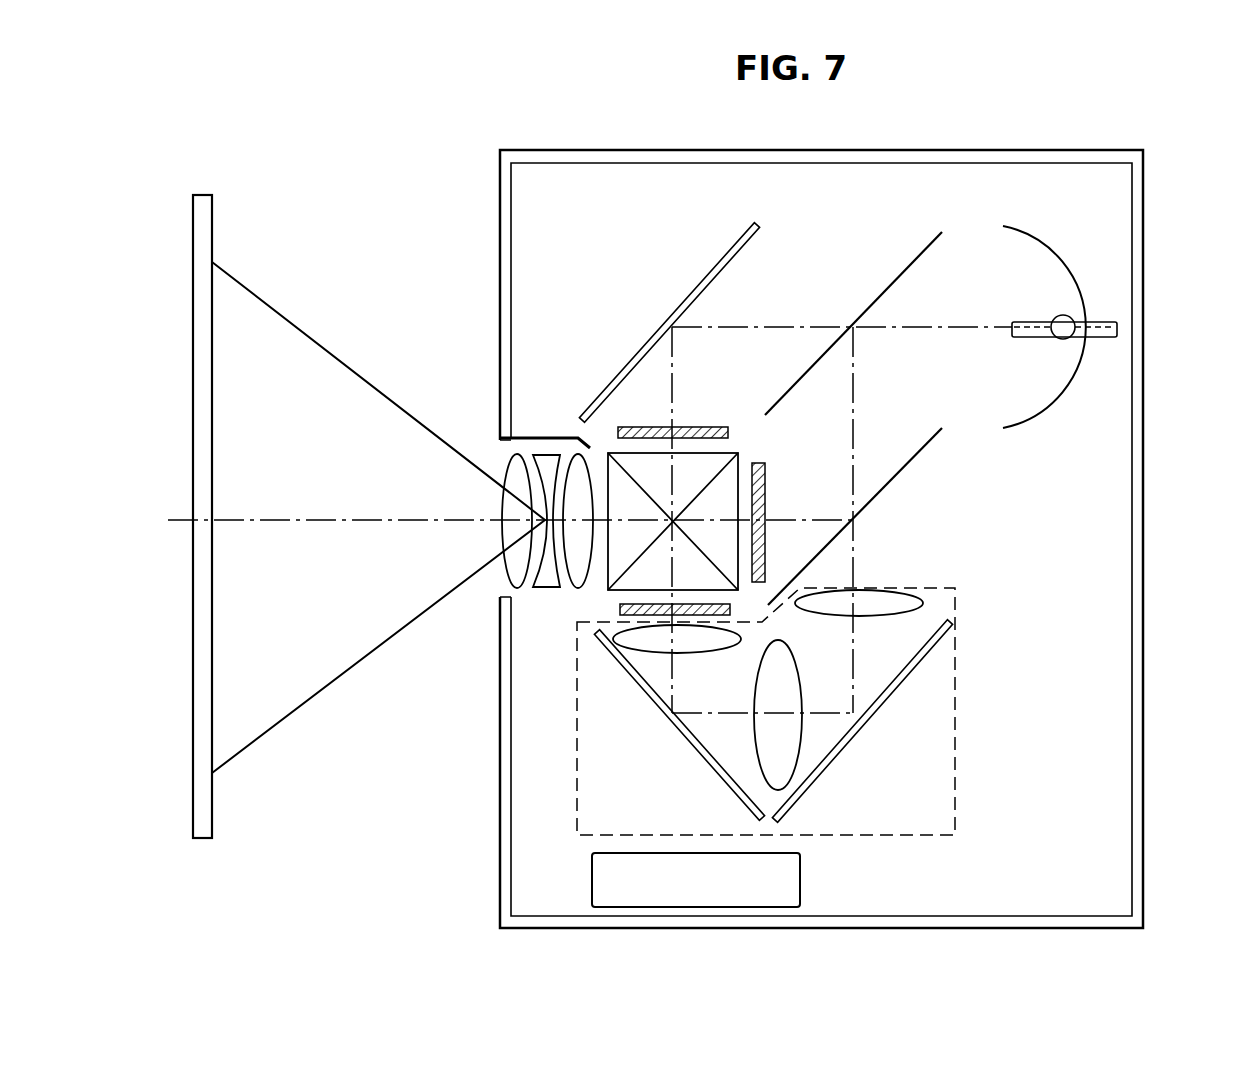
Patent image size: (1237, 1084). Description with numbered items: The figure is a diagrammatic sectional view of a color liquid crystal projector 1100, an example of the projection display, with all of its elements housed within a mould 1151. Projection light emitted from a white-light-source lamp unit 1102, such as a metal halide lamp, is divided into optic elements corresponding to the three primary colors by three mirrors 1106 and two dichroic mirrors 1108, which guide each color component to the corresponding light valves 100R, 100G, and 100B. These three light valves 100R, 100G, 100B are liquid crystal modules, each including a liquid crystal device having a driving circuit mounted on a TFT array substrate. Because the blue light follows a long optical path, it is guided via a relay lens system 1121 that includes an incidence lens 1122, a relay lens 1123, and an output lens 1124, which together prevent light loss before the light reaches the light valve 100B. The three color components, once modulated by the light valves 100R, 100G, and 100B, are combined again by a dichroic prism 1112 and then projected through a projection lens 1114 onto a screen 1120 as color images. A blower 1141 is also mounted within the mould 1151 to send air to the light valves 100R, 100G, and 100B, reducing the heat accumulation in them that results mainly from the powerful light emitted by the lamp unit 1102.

The liquid crystal projector 1100 is at (1008, 150).
The mould 1151 is at (1144, 738).
The white-light-source lamp unit 1102 is at (1070, 390).
The dichroic mirrors 1108 is at (893, 280).
The mirrors 1106 is at (663, 328).
The light valve for R 100R is at (653, 427).
The light valve for G 100G is at (756, 462).
The light valve for B 100B is at (618, 609).
The dichroic prism 1112 is at (618, 565).
The projection lens 1114 is at (545, 437).
The screen 1120 is at (215, 738).
The relay lens system 1121 is at (958, 758).
The incidence lens 1122 is at (897, 597).
The relay lens 1123 is at (798, 738).
The output lens 1124 is at (643, 648).
The blower 1141 is at (800, 880).